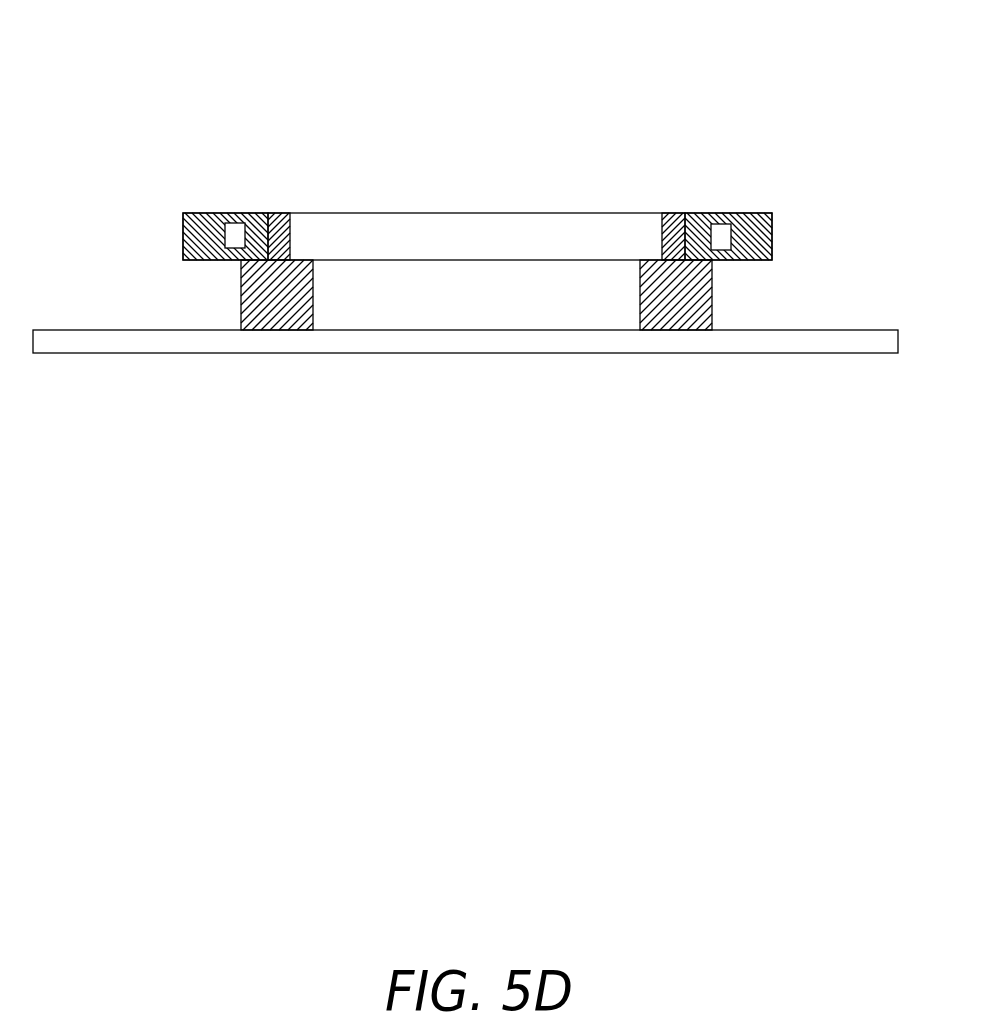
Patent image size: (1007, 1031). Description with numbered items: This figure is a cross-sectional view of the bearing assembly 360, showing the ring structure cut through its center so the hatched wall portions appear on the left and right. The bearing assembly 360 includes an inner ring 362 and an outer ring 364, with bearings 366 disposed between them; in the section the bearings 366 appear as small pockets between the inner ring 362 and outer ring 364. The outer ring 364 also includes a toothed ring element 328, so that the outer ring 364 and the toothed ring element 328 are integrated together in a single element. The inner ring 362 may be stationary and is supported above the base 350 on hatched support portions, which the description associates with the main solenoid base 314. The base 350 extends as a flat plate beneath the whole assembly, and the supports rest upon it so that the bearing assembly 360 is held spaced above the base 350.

The main solenoid base 314 is at (690, 297).
The toothed ring element 328 is at (775, 212).
The base 350 is at (872, 330).
The bearing assembly 360 is at (167, 230).
The inner ring 362 is at (690, 215).
The outer ring 364 is at (755, 213).
The bearings 366 is at (721, 213).